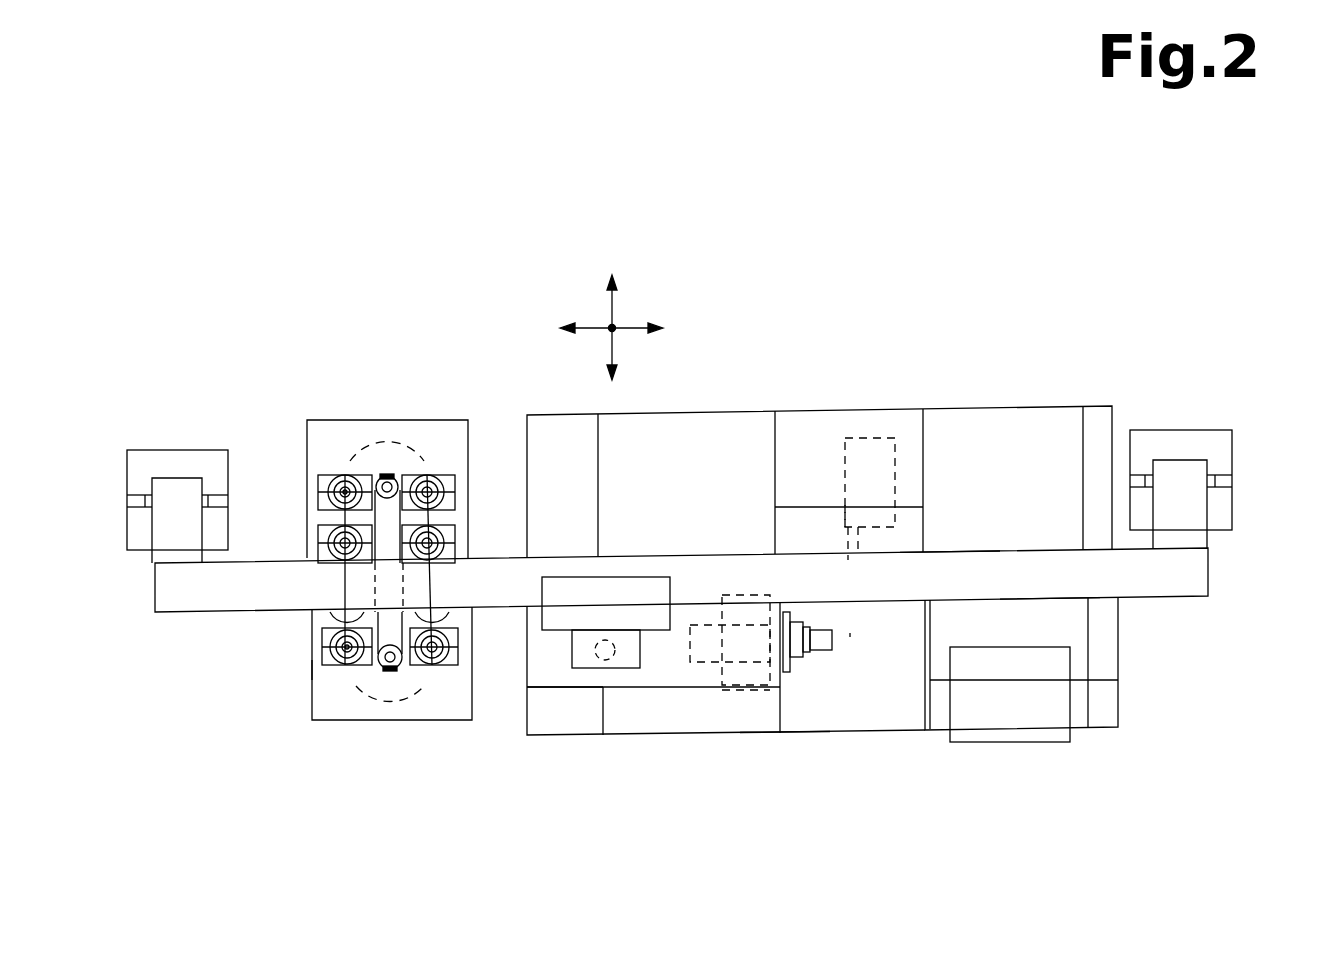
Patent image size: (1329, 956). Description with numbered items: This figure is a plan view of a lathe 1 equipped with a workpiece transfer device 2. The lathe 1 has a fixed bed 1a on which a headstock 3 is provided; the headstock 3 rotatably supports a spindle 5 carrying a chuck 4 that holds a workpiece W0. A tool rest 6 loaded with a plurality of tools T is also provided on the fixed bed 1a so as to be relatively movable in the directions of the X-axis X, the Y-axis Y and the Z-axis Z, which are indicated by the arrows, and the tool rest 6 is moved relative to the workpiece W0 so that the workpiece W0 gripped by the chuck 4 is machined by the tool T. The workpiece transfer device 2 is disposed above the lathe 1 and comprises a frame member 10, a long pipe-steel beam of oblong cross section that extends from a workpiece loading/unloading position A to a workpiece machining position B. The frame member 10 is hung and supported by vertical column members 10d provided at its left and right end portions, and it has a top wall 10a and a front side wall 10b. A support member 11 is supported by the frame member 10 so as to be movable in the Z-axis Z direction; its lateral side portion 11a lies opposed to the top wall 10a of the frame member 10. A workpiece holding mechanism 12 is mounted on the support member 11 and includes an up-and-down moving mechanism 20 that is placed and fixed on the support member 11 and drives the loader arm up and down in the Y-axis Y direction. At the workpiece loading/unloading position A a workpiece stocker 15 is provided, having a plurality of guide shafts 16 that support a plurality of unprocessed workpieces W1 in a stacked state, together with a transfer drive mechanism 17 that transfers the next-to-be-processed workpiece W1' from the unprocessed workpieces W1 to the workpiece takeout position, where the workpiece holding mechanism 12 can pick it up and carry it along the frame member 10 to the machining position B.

The lathe 1 is at (925, 742).
The fixed bed 1a is at (793, 730).
The workpiece transfer device 2 is at (283, 417).
The headstock 3 is at (750, 688).
The chuck 4 is at (785, 675).
The spindle 5 is at (697, 672).
The tool rest 6 is at (848, 552).
The frame member 10 is at (1002, 540).
The top wall 10a is at (960, 563).
The front side wall 10b is at (1045, 608).
The vertical column members 10d is at (147, 523).
The support member 11 is at (650, 568).
The lateral side portion 11a is at (605, 563).
The workpiece holding mechanism 12 is at (563, 648).
The workpiece stocker 15 is at (443, 402).
The guide shafts 16 is at (340, 545).
The transfer drive mechanism 17 is at (393, 462).
The up-and-down moving mechanism 20 is at (578, 668).
The tool T is at (852, 560).
The workpiece W0 is at (820, 652).
The unprocessed workpieces W1 is at (317, 413).
The next-to-be-processed workpiece W1' is at (298, 718).
The workpiece loading/unloading position A is at (316, 668).
The workpiece machining position B is at (850, 635).
The X-axis X is at (613, 318).
The Y-axis Y is at (612, 328).
The Z-axis Z is at (628, 333).